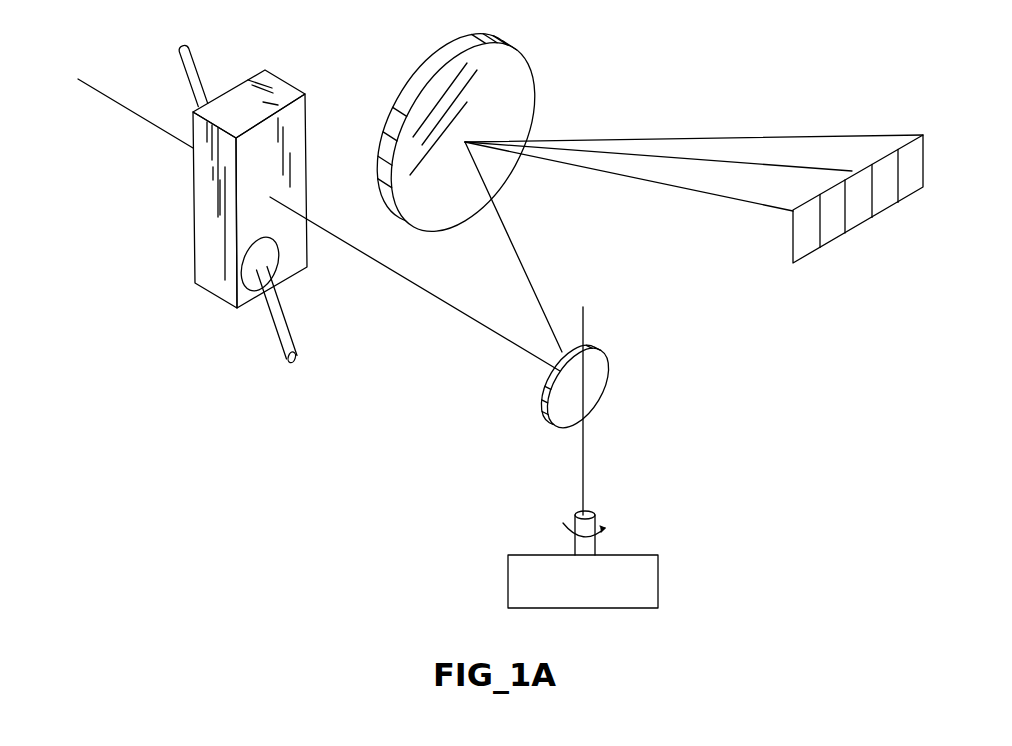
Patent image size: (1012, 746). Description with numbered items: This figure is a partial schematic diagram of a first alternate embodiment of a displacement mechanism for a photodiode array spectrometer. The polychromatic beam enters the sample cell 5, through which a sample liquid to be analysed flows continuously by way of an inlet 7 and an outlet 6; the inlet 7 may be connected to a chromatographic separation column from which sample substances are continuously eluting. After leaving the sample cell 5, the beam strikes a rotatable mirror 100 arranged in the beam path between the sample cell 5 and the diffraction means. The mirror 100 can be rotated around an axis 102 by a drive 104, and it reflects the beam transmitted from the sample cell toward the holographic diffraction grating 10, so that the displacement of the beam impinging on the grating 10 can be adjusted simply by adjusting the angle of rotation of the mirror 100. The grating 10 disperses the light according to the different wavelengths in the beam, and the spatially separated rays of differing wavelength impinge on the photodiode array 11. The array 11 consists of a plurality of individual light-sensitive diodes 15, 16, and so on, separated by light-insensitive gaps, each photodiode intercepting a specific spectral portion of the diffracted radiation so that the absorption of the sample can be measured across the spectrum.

The sample cell 5 is at (203, 201).
The outlet 6 is at (180, 52).
The inlet 7 is at (285, 368).
The holographic diffraction grating 10 is at (410, 87).
The photodiode array 11 is at (845, 232).
The light-sensitive diode 15 is at (913, 177).
The light-sensitive diode 16 is at (885, 193).
The rotatable mirror 100 is at (593, 393).
The axis 102 is at (583, 472).
The drive 104 is at (660, 583).